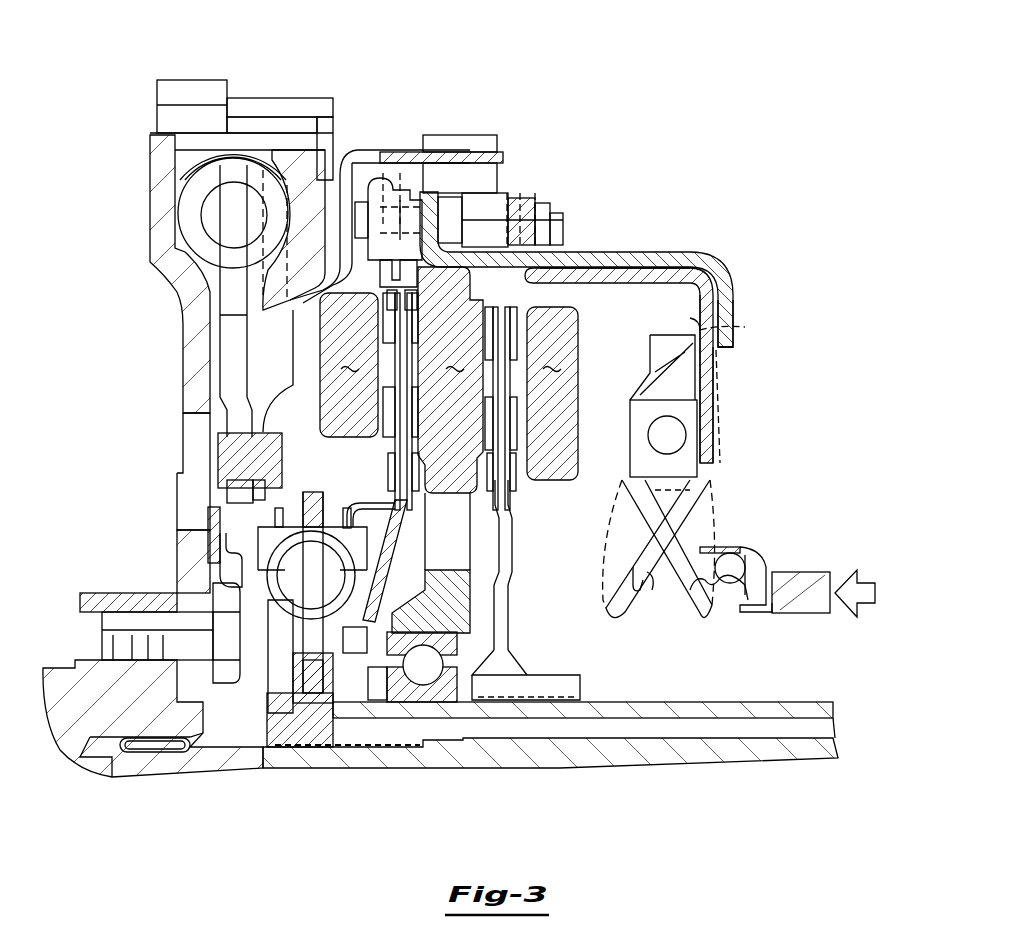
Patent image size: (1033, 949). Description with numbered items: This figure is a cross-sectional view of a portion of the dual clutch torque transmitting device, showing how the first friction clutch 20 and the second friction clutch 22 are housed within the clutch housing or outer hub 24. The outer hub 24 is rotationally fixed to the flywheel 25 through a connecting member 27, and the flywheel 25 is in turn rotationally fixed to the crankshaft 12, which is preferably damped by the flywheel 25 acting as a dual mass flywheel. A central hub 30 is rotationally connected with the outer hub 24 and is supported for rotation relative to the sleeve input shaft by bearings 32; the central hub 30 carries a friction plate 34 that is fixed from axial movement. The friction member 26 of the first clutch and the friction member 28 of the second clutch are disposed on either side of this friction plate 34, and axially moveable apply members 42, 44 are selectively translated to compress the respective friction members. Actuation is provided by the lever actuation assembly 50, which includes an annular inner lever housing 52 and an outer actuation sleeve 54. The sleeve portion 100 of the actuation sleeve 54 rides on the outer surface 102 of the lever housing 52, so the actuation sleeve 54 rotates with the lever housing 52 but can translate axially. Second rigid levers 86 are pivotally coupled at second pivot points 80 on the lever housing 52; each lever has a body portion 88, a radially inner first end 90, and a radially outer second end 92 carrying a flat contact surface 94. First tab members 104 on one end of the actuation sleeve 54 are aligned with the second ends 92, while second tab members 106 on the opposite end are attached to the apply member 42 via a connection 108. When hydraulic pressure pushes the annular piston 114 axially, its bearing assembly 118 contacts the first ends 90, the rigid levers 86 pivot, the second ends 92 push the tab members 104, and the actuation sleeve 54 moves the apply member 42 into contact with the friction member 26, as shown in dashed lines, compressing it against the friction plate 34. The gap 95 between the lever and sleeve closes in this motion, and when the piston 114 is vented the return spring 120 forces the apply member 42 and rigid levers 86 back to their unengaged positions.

The crankshaft 12 is at (60, 667).
The friction clutch 20 is at (463, 78).
The friction clutch 22 is at (600, 136).
The clutch housing 24 is at (346, 148).
The flywheel 25 is at (237, 370).
The friction member 26 is at (400, 417).
The connecting member 27 is at (232, 458).
The friction member 28 is at (497, 420).
The central hub 30 is at (471, 135).
The bearings 32 is at (424, 670).
The friction plate 34 is at (437, 450).
The apply member 42 is at (349, 365).
The apply member 44 is at (552, 393).
The lever actuation assembly 50 is at (735, 223).
The lever housing 52 is at (647, 262).
The actuation sleeve 54 is at (740, 296).
The second pivot points 80 is at (680, 365).
The second rigid levers 86 is at (708, 494).
The body portion 88 is at (668, 437).
The first end 90 is at (625, 620).
The second end 92 is at (725, 370).
The contact surface 94 is at (745, 327).
The gap 95 is at (692, 318).
The sleeve portion 100 is at (580, 253).
The outer surface 102 is at (610, 275).
The first tab members 104 is at (735, 347).
The second tab members 106 is at (436, 193).
The connection 108 is at (384, 228).
The annular piston 114 is at (816, 577).
The bearing assembly 118 is at (724, 548).
The return spring 120 is at (402, 203).